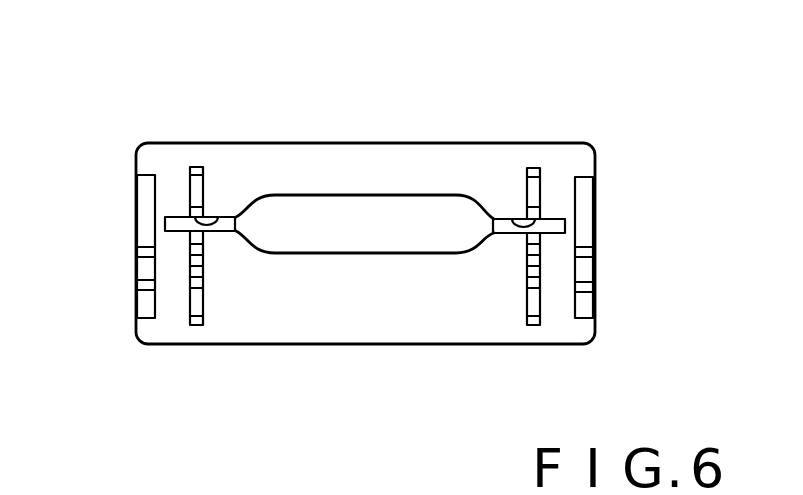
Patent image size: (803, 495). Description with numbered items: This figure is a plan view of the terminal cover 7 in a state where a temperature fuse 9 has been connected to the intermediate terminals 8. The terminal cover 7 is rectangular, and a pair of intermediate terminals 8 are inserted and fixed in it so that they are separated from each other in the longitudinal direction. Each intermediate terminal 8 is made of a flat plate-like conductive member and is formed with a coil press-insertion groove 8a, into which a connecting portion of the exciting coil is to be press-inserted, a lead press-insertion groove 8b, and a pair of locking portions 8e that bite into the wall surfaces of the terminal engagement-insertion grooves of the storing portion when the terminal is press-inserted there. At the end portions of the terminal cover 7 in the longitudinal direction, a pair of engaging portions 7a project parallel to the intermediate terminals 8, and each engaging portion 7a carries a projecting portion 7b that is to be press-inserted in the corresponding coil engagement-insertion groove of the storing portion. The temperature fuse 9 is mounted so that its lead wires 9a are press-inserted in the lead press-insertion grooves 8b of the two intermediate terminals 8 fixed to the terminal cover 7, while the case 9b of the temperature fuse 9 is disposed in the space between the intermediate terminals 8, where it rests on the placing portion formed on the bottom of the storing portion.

The terminal cover 7 is at (572, 158).
The engaging portion 7a is at (135, 198).
The projecting portion 7b is at (140, 268).
The intermediate terminal 8 is at (203, 190).
The coil press-insertion groove 8a is at (202, 268).
The lead press-insertion groove 8b is at (214, 216).
The locking portion 8e is at (197, 167).
The temperature fuse 9 is at (426, 126).
The lead wire 9a is at (178, 217).
The case 9b is at (390, 213).